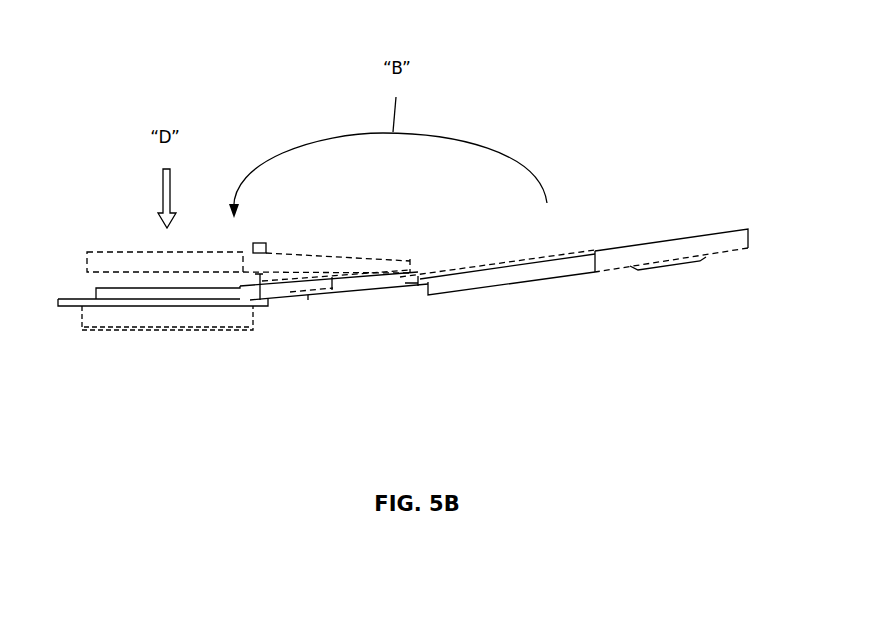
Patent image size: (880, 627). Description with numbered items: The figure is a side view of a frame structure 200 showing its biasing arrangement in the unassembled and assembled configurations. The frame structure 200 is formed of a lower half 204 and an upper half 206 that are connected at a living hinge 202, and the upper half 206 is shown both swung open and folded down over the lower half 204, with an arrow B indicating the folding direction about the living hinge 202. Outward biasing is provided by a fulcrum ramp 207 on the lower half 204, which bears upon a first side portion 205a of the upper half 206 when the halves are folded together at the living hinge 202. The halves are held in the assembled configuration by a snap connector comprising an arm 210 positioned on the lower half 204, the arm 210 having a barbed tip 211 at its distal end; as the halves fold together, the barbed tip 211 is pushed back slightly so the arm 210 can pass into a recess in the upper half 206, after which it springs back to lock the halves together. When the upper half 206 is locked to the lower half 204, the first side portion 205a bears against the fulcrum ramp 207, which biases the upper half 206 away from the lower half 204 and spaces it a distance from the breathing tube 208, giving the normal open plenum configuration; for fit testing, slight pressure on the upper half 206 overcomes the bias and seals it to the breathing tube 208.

The frame structure 200 is at (106, 75).
The living hinge 202 is at (422, 275).
The lower half 204 is at (81, 334).
The first side portion 205a is at (386, 275).
The upper half 206 is at (90, 244).
The fulcrum ramp 207 is at (357, 282).
The breathing tube 208 is at (191, 334).
The arm 210 is at (256, 275).
The barbed tip 211 is at (266, 244).